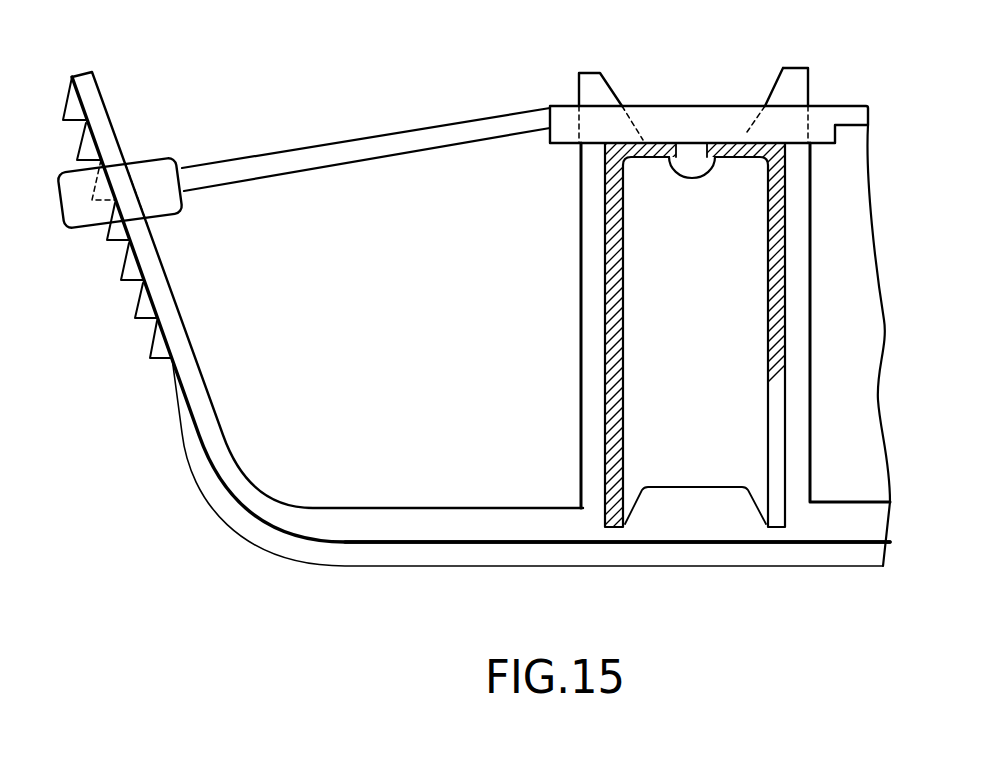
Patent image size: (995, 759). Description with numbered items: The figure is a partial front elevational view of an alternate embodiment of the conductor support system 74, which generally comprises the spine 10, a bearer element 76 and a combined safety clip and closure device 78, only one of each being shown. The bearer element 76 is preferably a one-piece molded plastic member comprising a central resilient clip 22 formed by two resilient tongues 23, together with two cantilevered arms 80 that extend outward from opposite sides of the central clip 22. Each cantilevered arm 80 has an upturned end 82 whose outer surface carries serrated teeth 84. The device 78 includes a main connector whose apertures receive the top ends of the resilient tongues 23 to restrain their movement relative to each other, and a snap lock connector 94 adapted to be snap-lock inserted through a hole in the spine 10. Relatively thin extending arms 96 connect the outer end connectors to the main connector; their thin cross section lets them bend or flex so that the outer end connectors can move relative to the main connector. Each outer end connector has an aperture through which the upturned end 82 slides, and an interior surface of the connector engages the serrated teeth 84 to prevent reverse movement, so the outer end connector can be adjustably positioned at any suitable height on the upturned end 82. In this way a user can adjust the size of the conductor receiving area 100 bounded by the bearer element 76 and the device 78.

The spine 10 is at (739, 467).
The central resilient clip 22 is at (579, 322).
The resilient tongues 23 is at (579, 388).
The conductor support system 74 is at (197, 36).
The bearer element 76 is at (371, 571).
The combined safety clip and closure device 78 is at (381, 166).
The cantilevered arms 80 is at (425, 508).
The upturned end 82 is at (186, 330).
The serrated teeth 84 is at (152, 360).
The snap lock connector 94 is at (696, 179).
The extending arms 96 is at (320, 146).
The conductor receiving area 100 is at (436, 347).